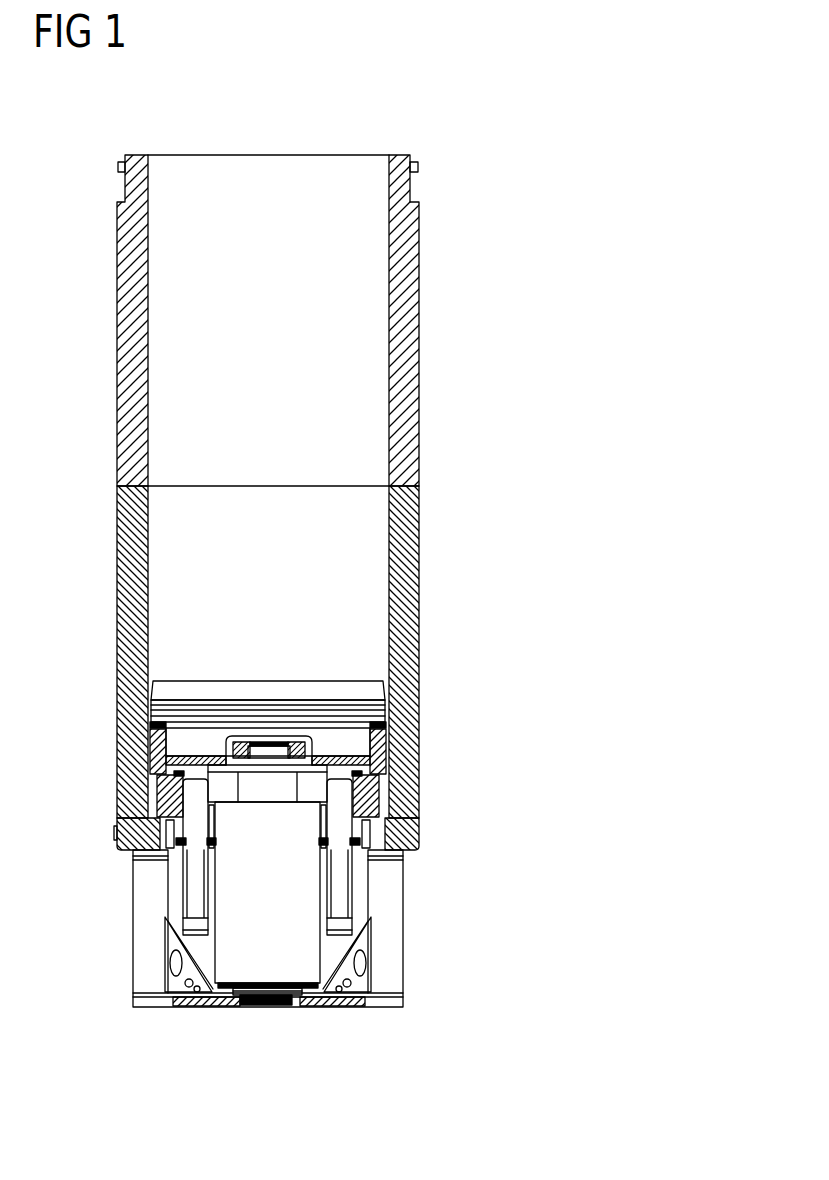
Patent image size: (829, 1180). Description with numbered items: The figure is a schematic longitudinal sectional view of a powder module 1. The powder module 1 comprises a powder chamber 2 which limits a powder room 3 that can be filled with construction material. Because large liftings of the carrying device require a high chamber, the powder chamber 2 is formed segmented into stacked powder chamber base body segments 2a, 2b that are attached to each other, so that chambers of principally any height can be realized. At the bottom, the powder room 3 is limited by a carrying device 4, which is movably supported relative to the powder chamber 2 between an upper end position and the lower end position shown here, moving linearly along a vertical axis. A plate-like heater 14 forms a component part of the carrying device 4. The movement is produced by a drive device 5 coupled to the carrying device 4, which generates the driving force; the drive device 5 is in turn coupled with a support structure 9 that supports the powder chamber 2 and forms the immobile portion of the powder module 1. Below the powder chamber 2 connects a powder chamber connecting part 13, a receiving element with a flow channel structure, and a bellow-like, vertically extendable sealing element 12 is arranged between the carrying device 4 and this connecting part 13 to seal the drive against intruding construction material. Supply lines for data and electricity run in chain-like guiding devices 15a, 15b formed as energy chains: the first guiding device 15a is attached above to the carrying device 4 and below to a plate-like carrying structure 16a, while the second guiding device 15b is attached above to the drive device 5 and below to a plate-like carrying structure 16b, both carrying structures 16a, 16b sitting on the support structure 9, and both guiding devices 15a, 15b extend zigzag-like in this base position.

The powder module 1 is at (400, 103).
The powder chamber 2 is at (452, 257).
The powder chamber base body segment 2a is at (412, 345).
The powder chamber base body segment 2b is at (410, 612).
The powder room 3 is at (265, 183).
The carrying device 4 is at (265, 663).
The drive device 5 is at (269, 1020).
The support structure 9 is at (387, 937).
The sealing element 12 is at (167, 795).
The powder chamber connecting part 13 is at (410, 838).
The plate-like heater 14 is at (378, 718).
The first guiding device 15a is at (193, 885).
The second guiding device 15b is at (340, 887).
The carrying structure 16a is at (197, 940).
The carrying structure 16b is at (341, 940).